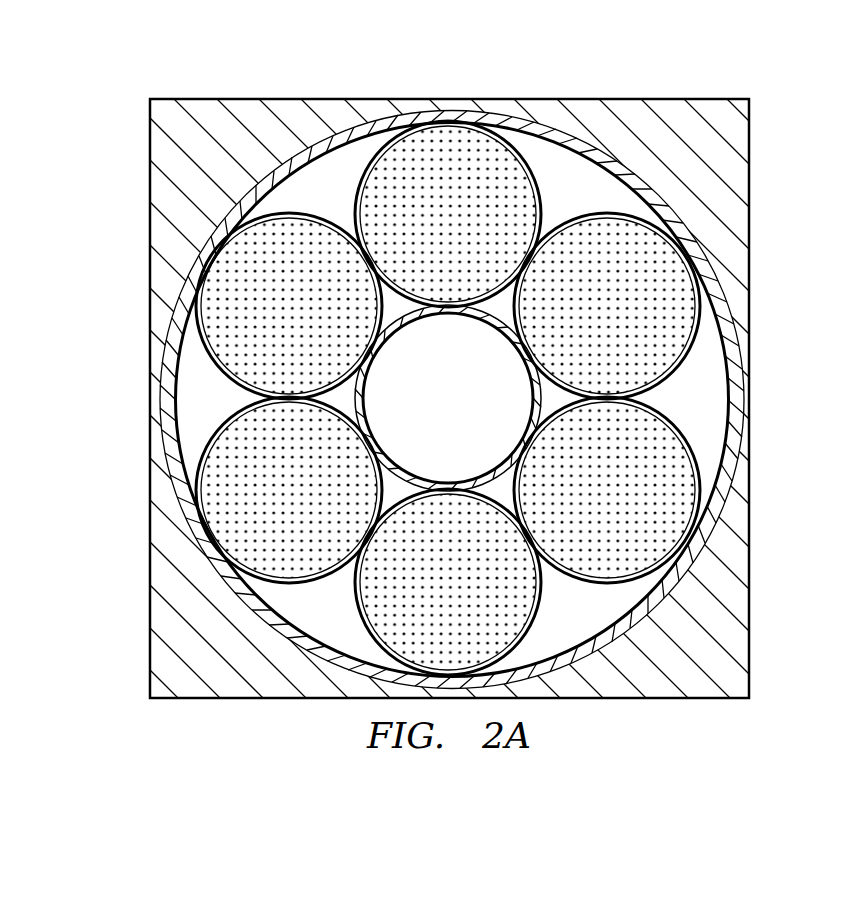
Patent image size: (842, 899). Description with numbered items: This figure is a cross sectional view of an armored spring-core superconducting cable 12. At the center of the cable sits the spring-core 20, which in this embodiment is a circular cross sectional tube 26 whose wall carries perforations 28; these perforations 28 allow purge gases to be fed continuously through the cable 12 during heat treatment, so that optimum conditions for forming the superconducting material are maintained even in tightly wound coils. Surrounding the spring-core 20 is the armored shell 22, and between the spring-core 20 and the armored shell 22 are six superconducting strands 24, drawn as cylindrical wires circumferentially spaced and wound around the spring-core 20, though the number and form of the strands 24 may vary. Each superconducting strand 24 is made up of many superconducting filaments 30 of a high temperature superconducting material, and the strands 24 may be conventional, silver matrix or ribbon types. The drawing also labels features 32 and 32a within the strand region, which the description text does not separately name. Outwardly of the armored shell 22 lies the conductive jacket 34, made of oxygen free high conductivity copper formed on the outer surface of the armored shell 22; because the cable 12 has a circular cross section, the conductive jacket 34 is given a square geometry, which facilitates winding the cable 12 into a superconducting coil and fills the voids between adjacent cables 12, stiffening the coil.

The armored spring-core superconducting cable 12 is at (192, 60).
The spring-core 20 is at (448, 398).
The armored shell 22 is at (727, 405).
The superconducting strand 24 is at (282, 285).
The tube 26 is at (517, 447).
The perforations 28 is at (405, 470).
The superconducting filaments 30 is at (510, 196).
The fiber bundle jacket 32 is at (307, 243).
The fiber bundle jacket 32a is at (607, 563).
The conductive jacket 34 is at (163, 170).